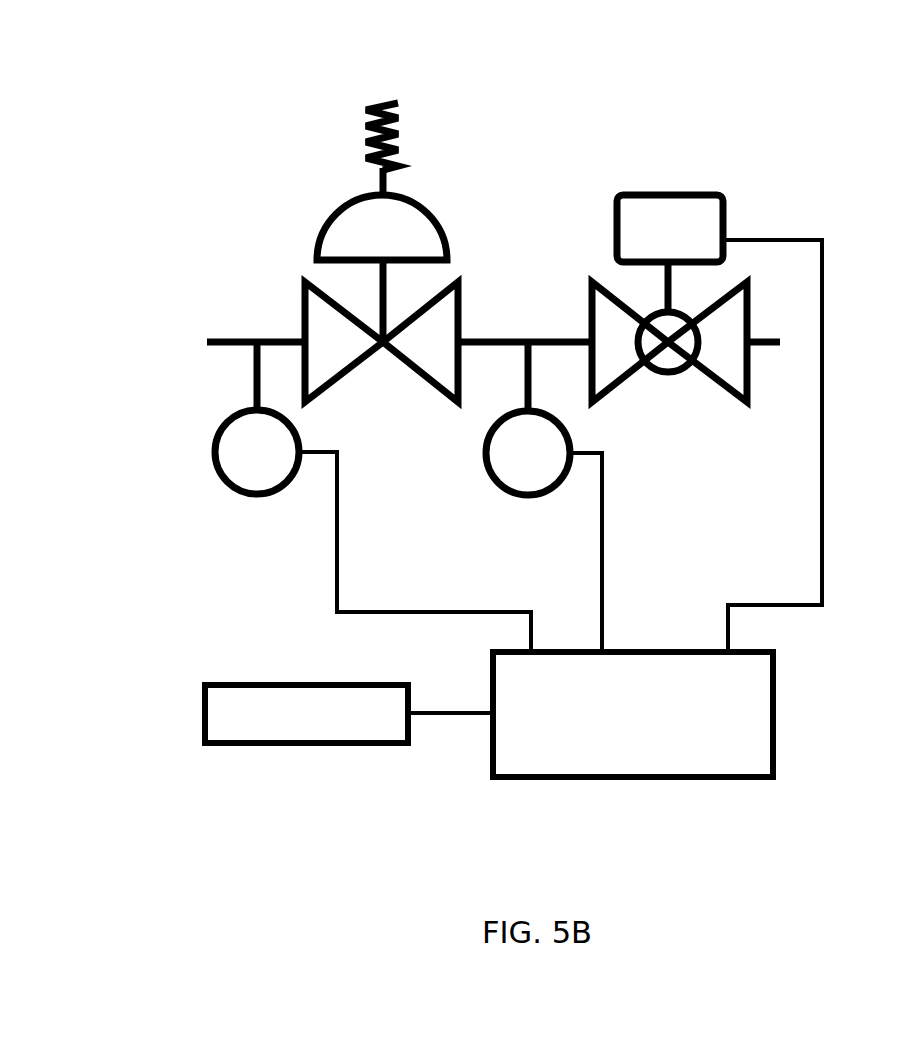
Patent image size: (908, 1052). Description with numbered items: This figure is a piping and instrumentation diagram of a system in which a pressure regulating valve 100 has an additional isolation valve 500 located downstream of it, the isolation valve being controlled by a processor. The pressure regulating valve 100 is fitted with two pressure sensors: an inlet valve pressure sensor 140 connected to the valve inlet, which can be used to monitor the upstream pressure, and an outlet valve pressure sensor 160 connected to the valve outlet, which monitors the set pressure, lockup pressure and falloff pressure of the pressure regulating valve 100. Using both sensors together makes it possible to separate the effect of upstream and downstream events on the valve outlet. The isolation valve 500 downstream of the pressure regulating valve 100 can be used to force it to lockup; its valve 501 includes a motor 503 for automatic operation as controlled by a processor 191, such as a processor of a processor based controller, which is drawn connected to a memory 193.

The pressure regulating valve 100 is at (449, 96).
The isolation valve 500 is at (707, 363).
The valve 501 is at (687, 385).
The motor 503 is at (737, 220).
The inlet valve pressure sensor 140 is at (228, 512).
The outlet valve pressure sensor 160 is at (553, 508).
The processor 191 is at (782, 713).
The memory 193 is at (198, 710).